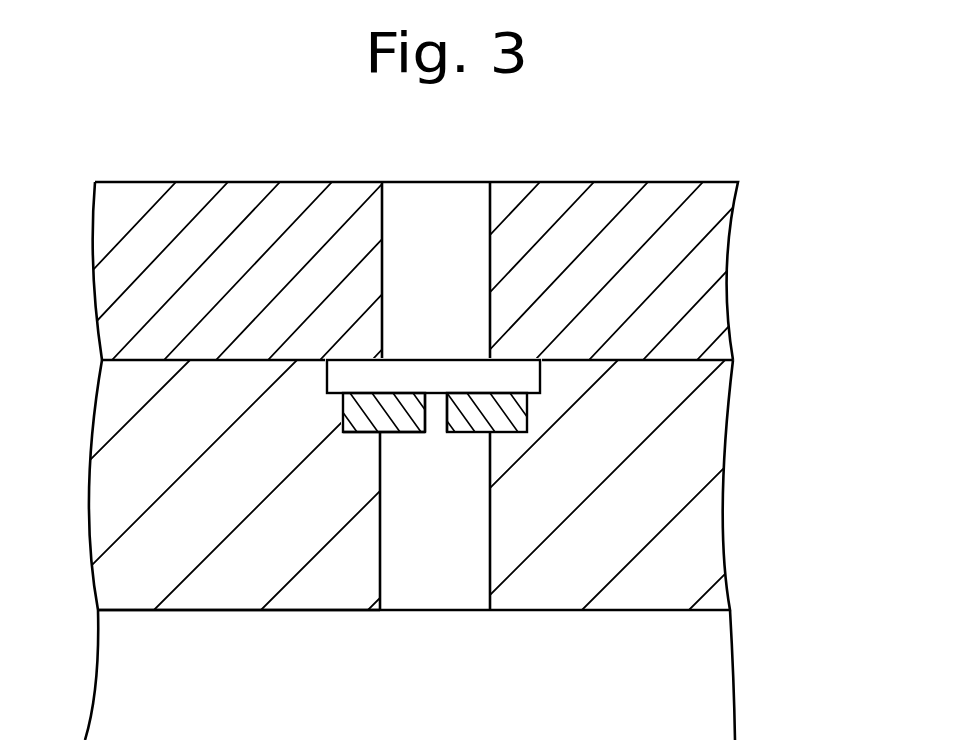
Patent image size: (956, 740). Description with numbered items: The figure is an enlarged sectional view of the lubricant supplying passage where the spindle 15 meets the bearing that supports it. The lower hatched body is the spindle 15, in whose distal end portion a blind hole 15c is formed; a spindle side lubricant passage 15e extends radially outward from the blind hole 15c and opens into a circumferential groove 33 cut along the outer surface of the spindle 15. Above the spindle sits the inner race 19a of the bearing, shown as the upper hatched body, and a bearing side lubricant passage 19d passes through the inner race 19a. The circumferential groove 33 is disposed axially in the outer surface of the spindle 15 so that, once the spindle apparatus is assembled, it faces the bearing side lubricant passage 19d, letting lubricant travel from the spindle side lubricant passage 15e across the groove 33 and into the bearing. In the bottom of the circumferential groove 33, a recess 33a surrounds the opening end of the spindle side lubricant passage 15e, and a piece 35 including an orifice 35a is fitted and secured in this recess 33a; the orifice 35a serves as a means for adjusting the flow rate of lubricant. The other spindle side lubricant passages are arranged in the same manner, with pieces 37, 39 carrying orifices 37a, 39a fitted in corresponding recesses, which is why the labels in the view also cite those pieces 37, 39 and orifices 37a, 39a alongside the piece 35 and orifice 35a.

The spindle 15 is at (469, 549).
The blind hole 15c is at (187, 610).
The spindle side lubricant passage 15e is at (380, 568).
The inner race 19a is at (436, 241).
The bearing side lubricant passage 19d is at (488, 248).
The circumferential groove 33 is at (461, 391).
The recess 33a is at (353, 423).
The piece 35 is at (606, 425).
The piece 37 is at (606, 425).
The piece 39 is at (497, 415).
The orifice 35a is at (461, 277).
The orifice 37a is at (461, 277).
The orifice 39a is at (443, 393).